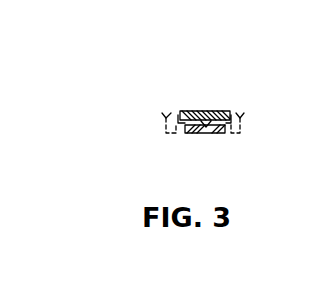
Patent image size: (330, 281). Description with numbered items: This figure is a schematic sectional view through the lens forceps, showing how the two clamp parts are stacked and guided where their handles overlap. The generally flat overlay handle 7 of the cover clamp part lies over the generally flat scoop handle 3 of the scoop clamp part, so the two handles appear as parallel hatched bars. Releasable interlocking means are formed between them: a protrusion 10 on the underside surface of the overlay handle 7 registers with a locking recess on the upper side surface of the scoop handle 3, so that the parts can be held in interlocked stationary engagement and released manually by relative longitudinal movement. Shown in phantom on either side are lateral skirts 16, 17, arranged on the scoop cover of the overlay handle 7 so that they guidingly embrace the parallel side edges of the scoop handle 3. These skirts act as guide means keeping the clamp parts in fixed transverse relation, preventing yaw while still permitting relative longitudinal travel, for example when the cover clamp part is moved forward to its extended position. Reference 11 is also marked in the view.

The scoop handle 3 is at (191, 148).
The overlay handle 7 is at (170, 160).
The protrusion 10 is at (238, 160).
The lower plate hatching 11 is at (226, 148).
The lateral skirt 16 is at (162, 113).
The lateral skirt 17 is at (244, 113).